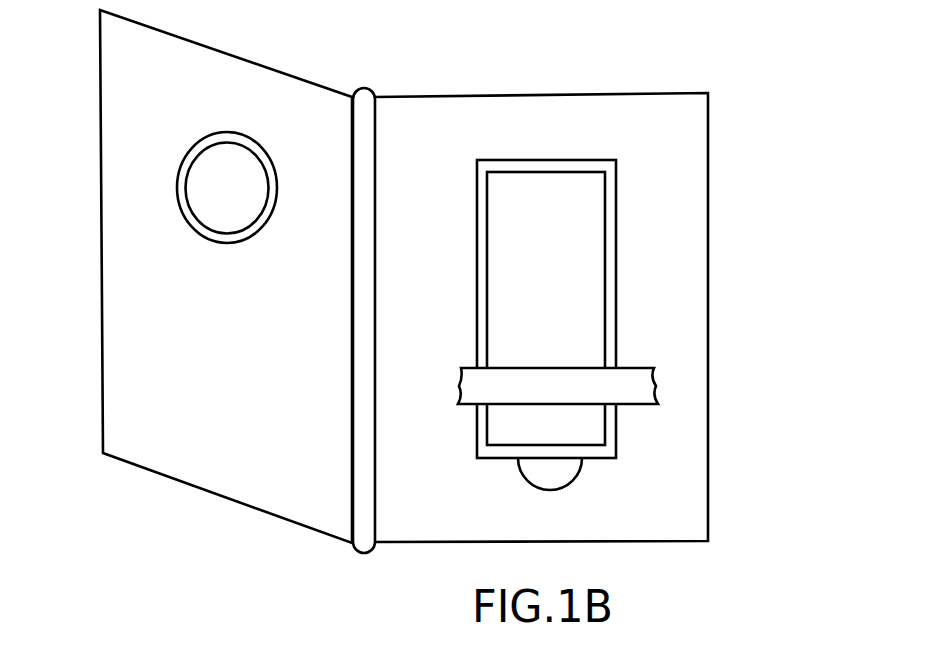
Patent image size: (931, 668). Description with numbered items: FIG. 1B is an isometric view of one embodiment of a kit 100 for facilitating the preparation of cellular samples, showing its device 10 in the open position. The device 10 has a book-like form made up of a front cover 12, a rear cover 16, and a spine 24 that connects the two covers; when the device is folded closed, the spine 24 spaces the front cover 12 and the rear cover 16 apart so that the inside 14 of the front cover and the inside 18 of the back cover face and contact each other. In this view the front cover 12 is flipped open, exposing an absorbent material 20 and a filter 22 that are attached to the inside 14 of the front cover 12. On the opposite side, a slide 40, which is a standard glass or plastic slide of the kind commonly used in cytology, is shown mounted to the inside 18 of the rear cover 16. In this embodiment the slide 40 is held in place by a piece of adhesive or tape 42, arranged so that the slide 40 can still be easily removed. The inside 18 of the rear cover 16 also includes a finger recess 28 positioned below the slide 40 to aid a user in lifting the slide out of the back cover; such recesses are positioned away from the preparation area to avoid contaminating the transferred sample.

The kit 100 is at (441, 281).
The device 10 is at (419, 281).
The front cover 12 is at (198, 276).
The inside of the front cover 14 is at (245, 427).
The rear cover 16 is at (568, 317).
The inside of the back cover 18 is at (650, 141).
The absorbent material 20 is at (250, 218).
The filter 22 is at (197, 228).
The spine 24 is at (362, 90).
The finger recesses 28 is at (540, 478).
The slide 40 is at (535, 274).
The adhesive or tape 42 is at (652, 372).